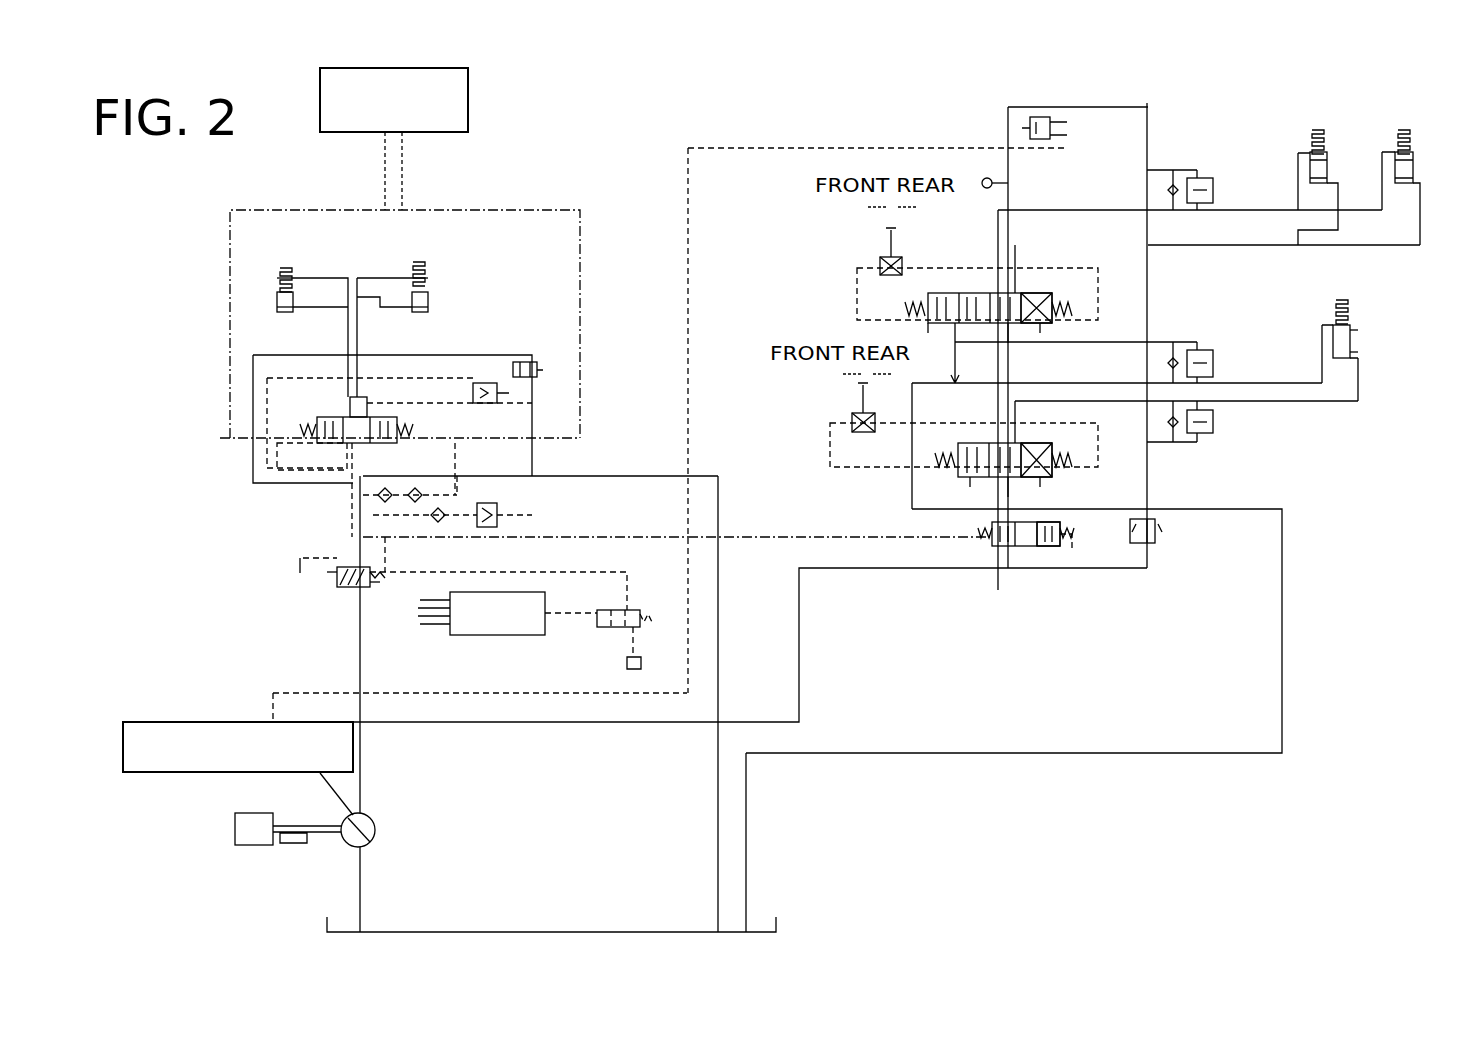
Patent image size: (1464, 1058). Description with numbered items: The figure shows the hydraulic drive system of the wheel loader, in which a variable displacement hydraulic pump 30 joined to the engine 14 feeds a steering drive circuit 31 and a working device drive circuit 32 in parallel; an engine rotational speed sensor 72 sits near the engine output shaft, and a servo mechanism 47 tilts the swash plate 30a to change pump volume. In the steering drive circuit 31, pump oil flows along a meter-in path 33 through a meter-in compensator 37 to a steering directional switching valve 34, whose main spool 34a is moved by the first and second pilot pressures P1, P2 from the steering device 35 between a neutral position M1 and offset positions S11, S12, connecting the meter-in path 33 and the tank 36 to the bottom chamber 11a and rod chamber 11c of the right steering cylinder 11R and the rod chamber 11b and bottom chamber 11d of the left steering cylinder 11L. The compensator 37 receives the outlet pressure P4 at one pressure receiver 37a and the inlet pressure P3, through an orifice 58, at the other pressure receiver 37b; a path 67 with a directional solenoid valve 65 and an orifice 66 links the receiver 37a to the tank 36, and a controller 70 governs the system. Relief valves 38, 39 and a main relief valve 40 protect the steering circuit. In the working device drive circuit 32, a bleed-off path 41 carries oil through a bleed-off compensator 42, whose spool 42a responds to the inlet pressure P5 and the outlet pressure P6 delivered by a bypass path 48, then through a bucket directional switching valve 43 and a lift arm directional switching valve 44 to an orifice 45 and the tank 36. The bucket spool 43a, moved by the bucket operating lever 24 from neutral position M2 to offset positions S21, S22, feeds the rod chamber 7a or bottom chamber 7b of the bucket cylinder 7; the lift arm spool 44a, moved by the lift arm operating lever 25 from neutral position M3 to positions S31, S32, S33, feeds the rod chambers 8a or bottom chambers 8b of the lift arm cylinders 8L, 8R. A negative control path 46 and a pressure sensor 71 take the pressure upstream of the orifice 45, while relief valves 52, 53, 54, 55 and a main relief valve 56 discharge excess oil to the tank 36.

The steering device 35 is at (470, 105).
The steering drive circuit 31 is at (547, 186).
The left steering cylinder 11L is at (295, 263).
The right steering cylinder 11R is at (415, 260).
The bottom chamber of right steering cylinder 11a is at (430, 310).
The rod chamber of left steering cylinder 11b is at (276, 278).
The rod chamber of right steering cylinder 11c is at (430, 278).
The bottom chamber of left steering cylinder 11d is at (276, 308).
The steering directional switching valve 34 is at (326, 406).
The main spool 34a is at (385, 417).
The first offset position S11 is at (312, 456).
The second offset position S12 is at (434, 469).
The neutral position M1 is at (371, 490).
The first relief valve 38 is at (497, 383).
The second relief valve 39 is at (538, 362).
The main relief valve 40 is at (500, 512).
The bypass path 48 is at (612, 537).
The outlet pressure of steering directional switching valve P6 is at (852, 538).
The first pilot pressure P1 is at (226, 439).
The second pilot pressure P2 is at (570, 438).
The inlet pressure of steering directional switching valve P3 is at (304, 558).
The outlet pressure of steering directional switching valve P4 is at (386, 556).
The inlet pressure of bleed-off compensator P5 is at (1062, 540).
The working device drive circuit 32 is at (734, 130).
The negative control path 46 is at (808, 147).
The meter-in path 33 is at (362, 648).
The bleed-off path 41 is at (546, 724).
The tank 36 is at (616, 676).
The orifice 58 is at (298, 568).
The meter-in compensator 37 is at (339, 590).
The one pressure receiver 37a is at (372, 592).
The other pressure receiver 37b is at (318, 585).
The path 67 is at (542, 565).
The controller 70 is at (496, 636).
The directional solenoid valve 65 is at (635, 610).
The orifice 66 is at (644, 665).
The servo mechanism 47 is at (122, 748).
The swash plate 30a is at (320, 780).
The hydraulic pump 30 is at (377, 820).
The engine 14 is at (236, 834).
The engine rotational speed sensor 72 is at (292, 844).
The first relief valve 52 is at (1064, 107).
The orifice 45 is at (1009, 125).
The pressure sensor 71 is at (986, 186).
The lift arm directional switching valve 44 is at (955, 287).
The lift arm spool 44a is at (1047, 301).
The first offset position S31 is at (1074, 353).
The second offset position S32 is at (1067, 344).
The third offset position S33 is at (916, 344).
The neutral position M3 is at (1021, 347).
The lift arm operating lever 25 is at (886, 249).
The bucket operating lever 24 is at (861, 400).
The bucket directional switching valve 43 is at (962, 439).
The bucket spool 43a is at (1040, 453).
The first offset position S21 is at (948, 488).
The second offset position S22 is at (1074, 488).
The neutral position M2 is at (1030, 490).
The bleed-off compensator 42 is at (986, 544).
The spool 42a is at (1020, 545).
The main relief valve 56 is at (1156, 546).
The relief valve 53 is at (1210, 352).
The relief valve 54 is at (1212, 434).
The relief valve 55 is at (1210, 178).
The bucket cylinder 7 is at (1343, 298).
The rod chamber of bucket cylinder 7a is at (1350, 329).
The bottom chamber of bucket cylinder 7b is at (1350, 370).
The left lift arm cylinder 8L is at (1321, 125).
The right lift arm cylinder 8R is at (1404, 125).
The rod chamber of lift arm cylinder 8a is at (1308, 150).
The bottom chamber of lift arm cylinder 8b is at (1308, 178).